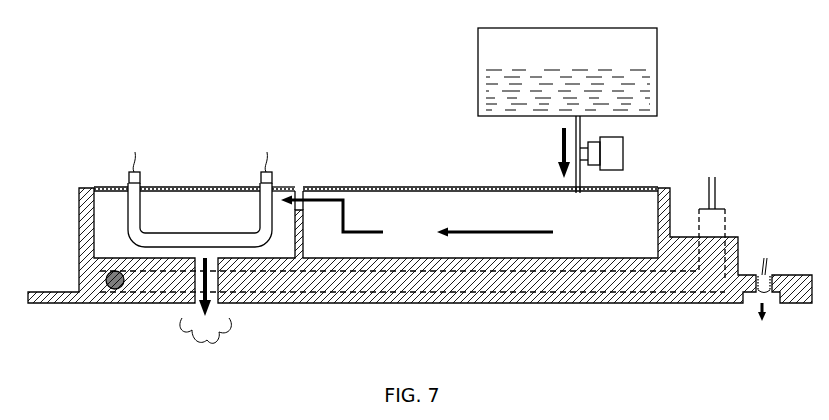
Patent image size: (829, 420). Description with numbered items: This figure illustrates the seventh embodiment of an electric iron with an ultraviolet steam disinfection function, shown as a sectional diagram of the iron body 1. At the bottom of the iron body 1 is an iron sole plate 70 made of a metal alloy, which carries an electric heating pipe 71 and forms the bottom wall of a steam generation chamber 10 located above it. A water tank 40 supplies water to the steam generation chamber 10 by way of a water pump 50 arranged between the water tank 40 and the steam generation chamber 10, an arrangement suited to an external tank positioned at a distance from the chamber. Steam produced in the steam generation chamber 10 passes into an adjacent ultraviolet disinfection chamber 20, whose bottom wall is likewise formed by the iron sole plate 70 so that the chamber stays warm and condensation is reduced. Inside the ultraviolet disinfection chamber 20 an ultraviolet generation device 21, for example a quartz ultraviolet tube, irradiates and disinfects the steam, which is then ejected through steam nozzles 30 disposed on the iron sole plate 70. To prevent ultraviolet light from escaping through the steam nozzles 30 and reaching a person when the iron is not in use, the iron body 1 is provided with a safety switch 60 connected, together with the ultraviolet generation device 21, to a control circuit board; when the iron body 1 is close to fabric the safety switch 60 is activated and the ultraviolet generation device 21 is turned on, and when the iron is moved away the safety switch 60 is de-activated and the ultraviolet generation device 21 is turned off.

The iron body 1 is at (79, 58).
The steam generation chamber 10 is at (429, 204).
The ultraviolet disinfection chamber 20 is at (115, 212).
The ultraviolet generation device 21 is at (202, 231).
The steam nozzles 30 is at (195, 306).
The water tank 40 is at (647, 53).
The water pump 50 is at (623, 152).
The safety switch 60 is at (757, 300).
The iron sole plate 70 is at (460, 308).
The electric heating pipe 71 is at (723, 222).